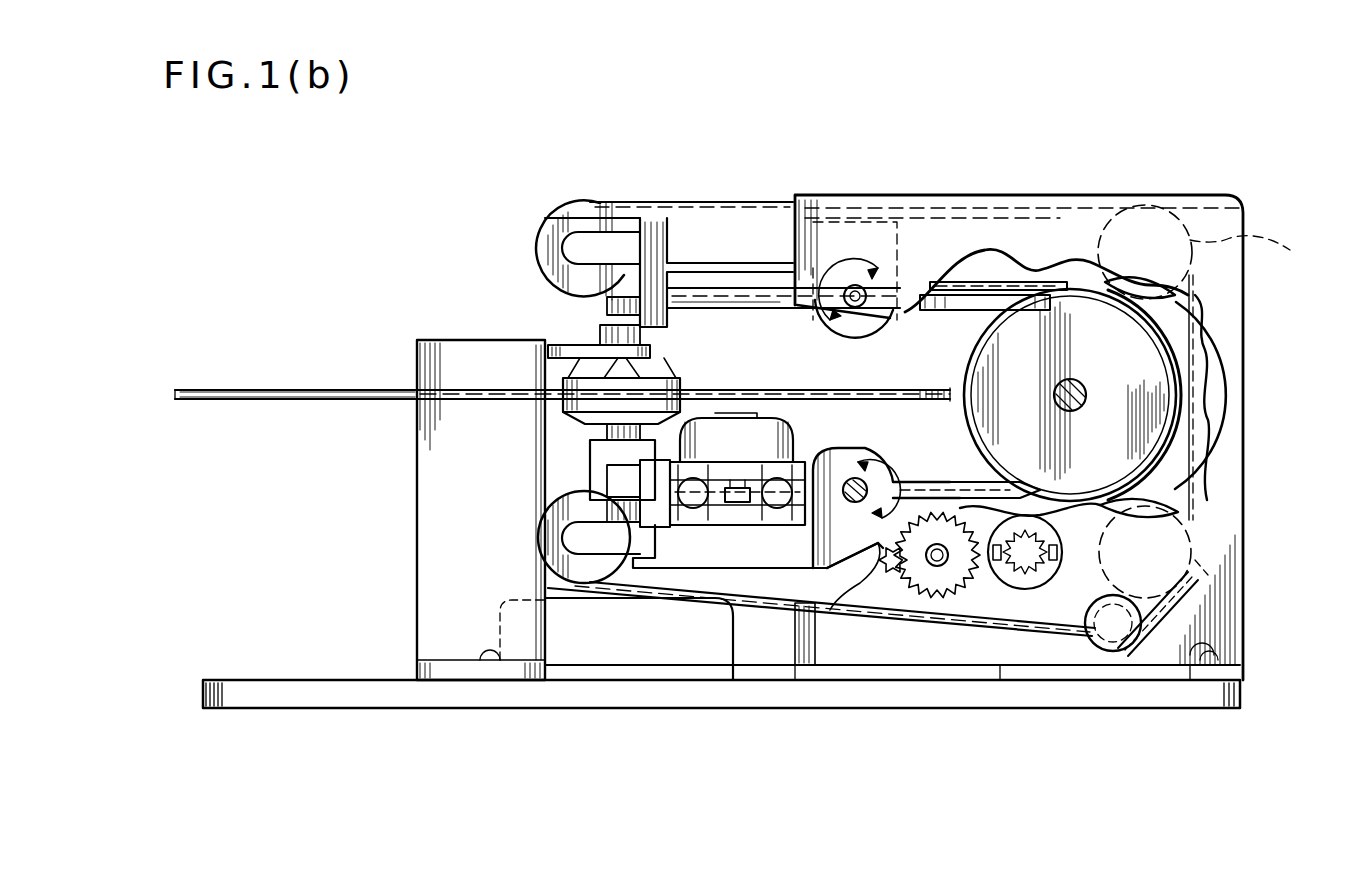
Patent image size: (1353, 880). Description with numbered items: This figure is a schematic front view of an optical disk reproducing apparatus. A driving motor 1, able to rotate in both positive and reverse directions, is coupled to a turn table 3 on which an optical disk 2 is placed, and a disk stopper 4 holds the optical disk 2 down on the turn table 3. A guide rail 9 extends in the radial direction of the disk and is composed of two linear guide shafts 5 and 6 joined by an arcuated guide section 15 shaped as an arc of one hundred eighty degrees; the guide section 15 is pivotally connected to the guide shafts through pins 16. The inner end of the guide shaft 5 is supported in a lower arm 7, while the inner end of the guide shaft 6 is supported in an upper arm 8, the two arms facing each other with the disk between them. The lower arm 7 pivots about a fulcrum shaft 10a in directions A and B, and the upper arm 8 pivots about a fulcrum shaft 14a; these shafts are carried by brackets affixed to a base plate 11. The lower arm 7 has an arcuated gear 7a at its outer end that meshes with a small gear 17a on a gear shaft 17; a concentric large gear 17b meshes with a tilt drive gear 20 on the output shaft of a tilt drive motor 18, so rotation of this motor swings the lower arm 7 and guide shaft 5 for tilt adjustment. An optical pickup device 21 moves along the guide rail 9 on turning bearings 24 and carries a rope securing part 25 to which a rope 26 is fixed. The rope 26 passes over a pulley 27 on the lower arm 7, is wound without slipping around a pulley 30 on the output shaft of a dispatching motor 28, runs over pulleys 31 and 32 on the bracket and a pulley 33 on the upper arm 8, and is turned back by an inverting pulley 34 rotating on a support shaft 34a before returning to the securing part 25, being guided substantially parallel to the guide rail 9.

The driving motor 1 is at (598, 668).
The optical disk 2 is at (275, 392).
The turn table 3 is at (583, 412).
The disk stopper 4 is at (585, 376).
The guide shaft 5 is at (962, 488).
The guide shaft 6 is at (940, 312).
The lower arm 7 is at (708, 570).
The arcuated gear 7a is at (888, 548).
The upper arm 8 is at (698, 232).
The guide rail 9 is at (974, 314).
The fulcrum shaft 10a is at (854, 482).
The base plate 11 is at (400, 695).
The fulcrum shaft 14a is at (852, 308).
The guide section 15 is at (1181, 398).
The pin 16 is at (1100, 255).
The gear shaft 17 is at (960, 598).
The small gear 17a is at (937, 568).
The large gear 17b is at (882, 575).
The tilt drive motor 18 is at (1042, 590).
The tilt drive gear 20 is at (1020, 590).
The optical pickup device 21 is at (722, 418).
The turning bearing 24 is at (692, 500).
The rope securing part 25 is at (738, 503).
The rope 26 is at (640, 592).
The pulley 27 is at (568, 568).
The dispatching motor 28 is at (1130, 640).
The pulley 30 is at (1120, 648).
The pulley 31 is at (1208, 575).
The pulley 32 is at (1257, 251).
The pulley 33 is at (545, 225).
The inverting pulley 34 is at (1038, 330).
The support shaft 34a is at (1087, 394).